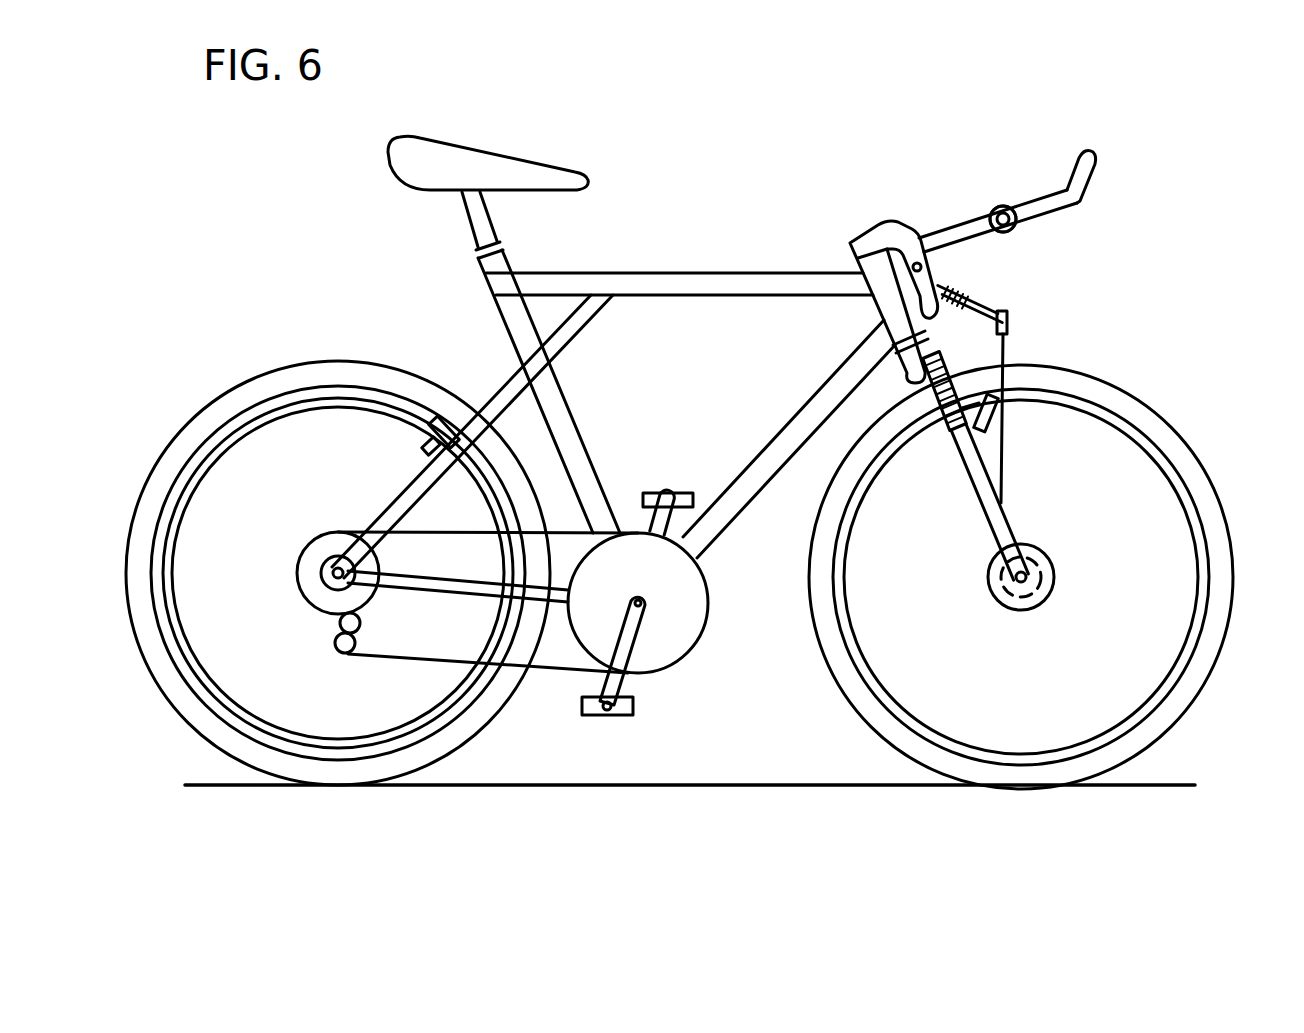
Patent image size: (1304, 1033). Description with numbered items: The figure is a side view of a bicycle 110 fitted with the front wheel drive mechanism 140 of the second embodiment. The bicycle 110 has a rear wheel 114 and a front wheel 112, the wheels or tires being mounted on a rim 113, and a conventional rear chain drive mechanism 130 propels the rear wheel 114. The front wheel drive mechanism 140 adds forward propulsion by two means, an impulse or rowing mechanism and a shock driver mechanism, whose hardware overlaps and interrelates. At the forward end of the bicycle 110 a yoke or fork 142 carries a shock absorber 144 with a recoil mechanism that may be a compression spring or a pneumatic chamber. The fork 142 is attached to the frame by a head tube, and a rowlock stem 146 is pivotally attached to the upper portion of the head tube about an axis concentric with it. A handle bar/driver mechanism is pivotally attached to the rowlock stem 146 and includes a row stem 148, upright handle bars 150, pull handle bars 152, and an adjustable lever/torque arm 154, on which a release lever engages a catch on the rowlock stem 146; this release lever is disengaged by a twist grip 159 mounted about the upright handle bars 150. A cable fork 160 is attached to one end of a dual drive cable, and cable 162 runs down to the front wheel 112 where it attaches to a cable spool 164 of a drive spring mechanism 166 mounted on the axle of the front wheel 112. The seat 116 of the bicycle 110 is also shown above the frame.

The bicycle 110 is at (715, 110).
The front wheel 112 is at (1148, 420).
The rim 113 is at (1192, 507).
The rear wheel 114 is at (216, 415).
The seat 116 is at (468, 172).
The rear chain drive mechanism 130 is at (710, 649).
The front wheel drive mechanism 140 is at (1192, 260).
The fork 142 is at (1003, 527).
The shock absorber 144 is at (952, 437).
The rowlock stem 146 is at (897, 236).
The row stem 148 is at (957, 245).
The upright handle bars 150 is at (1015, 230).
The pull handle bars 152 is at (1097, 170).
The adjustable lever/torque arm 154 is at (958, 273).
The twist grip 159 is at (1002, 207).
The cable fork 160 is at (1008, 322).
The cable 162 is at (1005, 356).
The cable spool 164 is at (1033, 595).
The drive spring mechanism 166 is at (1043, 585).